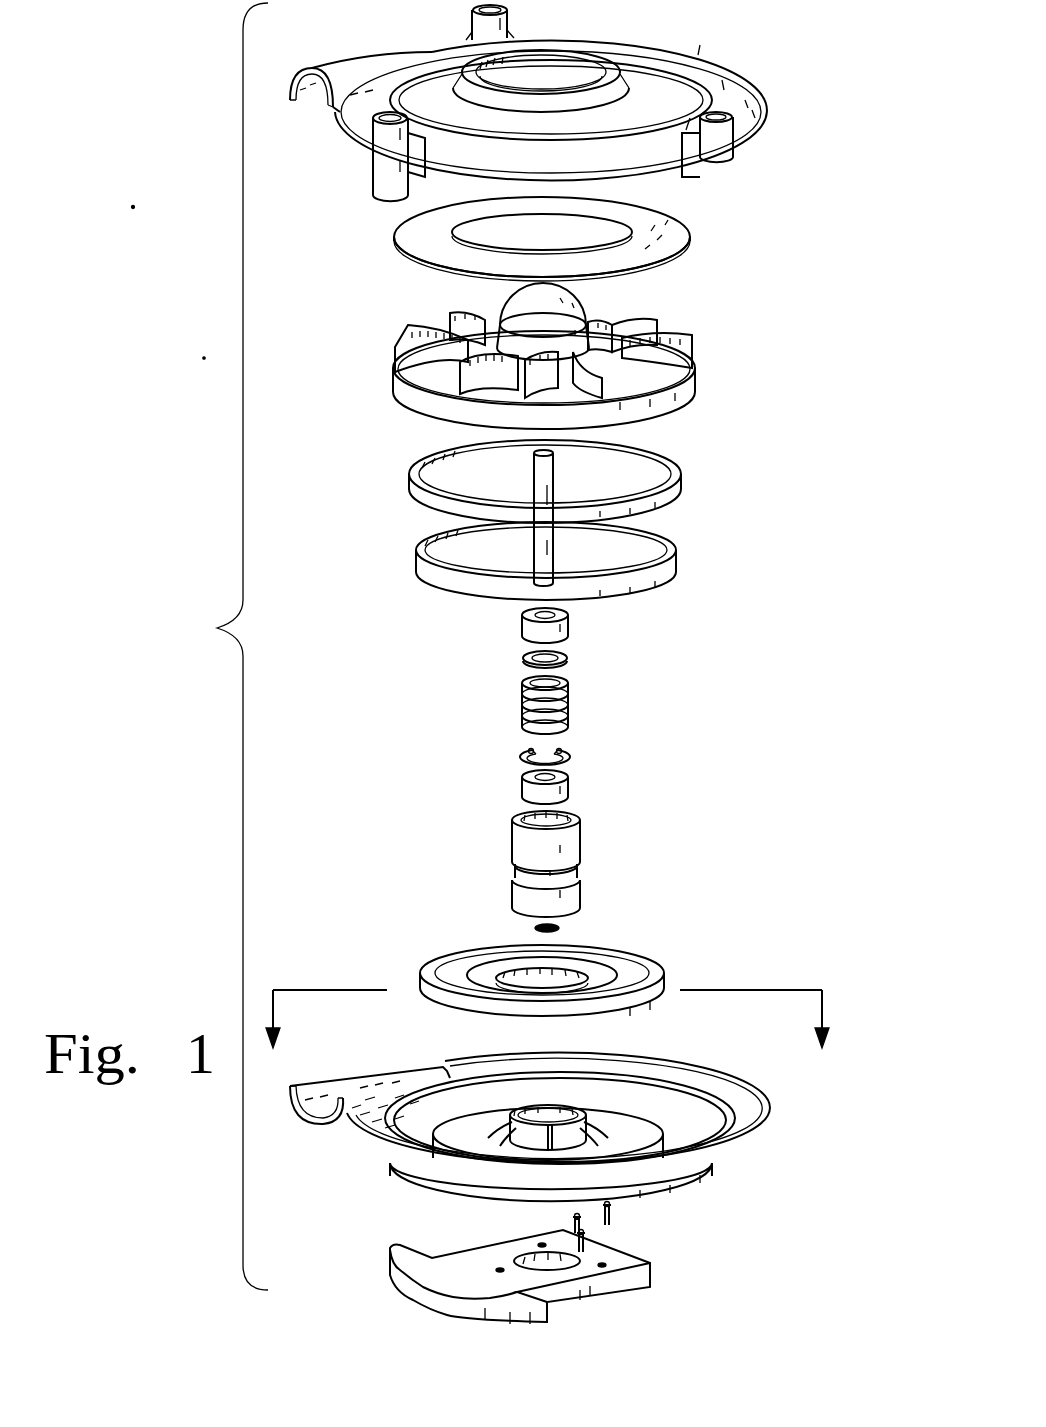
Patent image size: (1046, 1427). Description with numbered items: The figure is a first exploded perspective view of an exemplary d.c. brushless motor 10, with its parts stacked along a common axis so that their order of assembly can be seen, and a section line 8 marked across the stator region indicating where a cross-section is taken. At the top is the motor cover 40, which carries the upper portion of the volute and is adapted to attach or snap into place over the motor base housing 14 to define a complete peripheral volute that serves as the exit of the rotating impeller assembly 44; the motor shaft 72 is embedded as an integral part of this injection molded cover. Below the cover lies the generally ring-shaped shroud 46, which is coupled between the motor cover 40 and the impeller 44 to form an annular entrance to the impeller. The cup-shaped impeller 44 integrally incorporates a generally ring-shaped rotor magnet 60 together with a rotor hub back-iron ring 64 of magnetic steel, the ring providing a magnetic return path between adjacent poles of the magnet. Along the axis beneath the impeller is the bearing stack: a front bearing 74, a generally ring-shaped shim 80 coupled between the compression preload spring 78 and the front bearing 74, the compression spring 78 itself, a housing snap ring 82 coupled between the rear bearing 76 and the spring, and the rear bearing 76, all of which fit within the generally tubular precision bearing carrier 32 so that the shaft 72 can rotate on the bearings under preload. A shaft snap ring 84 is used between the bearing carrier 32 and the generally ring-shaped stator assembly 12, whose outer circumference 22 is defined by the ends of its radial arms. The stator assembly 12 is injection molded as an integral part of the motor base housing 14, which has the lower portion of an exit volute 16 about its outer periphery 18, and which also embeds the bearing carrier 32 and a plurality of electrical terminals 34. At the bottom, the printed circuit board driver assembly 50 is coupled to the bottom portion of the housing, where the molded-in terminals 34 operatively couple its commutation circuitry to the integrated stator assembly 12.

The section line 8- 8 is at (547, 1040).
The d.c. brushless motor 10 is at (222, 646).
The stator assembly 12 is at (655, 958).
The motor base housing 14 is at (572, 1145).
The exit volute 16 is at (340, 68).
The outer periphery 18 is at (347, 1120).
The outer circumference 22 is at (640, 1008).
The precision bearing carrier 32 is at (580, 836).
The electrical terminals 34 is at (612, 1217).
The motor cover 40 is at (678, 62).
The impeller assembly 44 is at (693, 340).
The shroud 46 is at (688, 224).
The printed circuit board driver assembly 50 is at (652, 1275).
The rotor magnet 60 is at (684, 558).
The rotor hub back-iron ring 64 is at (684, 478).
The motor shaft 72 is at (527, 563).
The front bearing 74 is at (570, 625).
The rear bearing 76 is at (570, 781).
The compression spring 78 is at (570, 700).
The shim 80 is at (522, 658).
The housing snap ring 82 is at (522, 760).
The shaft snap ring 84 is at (535, 928).